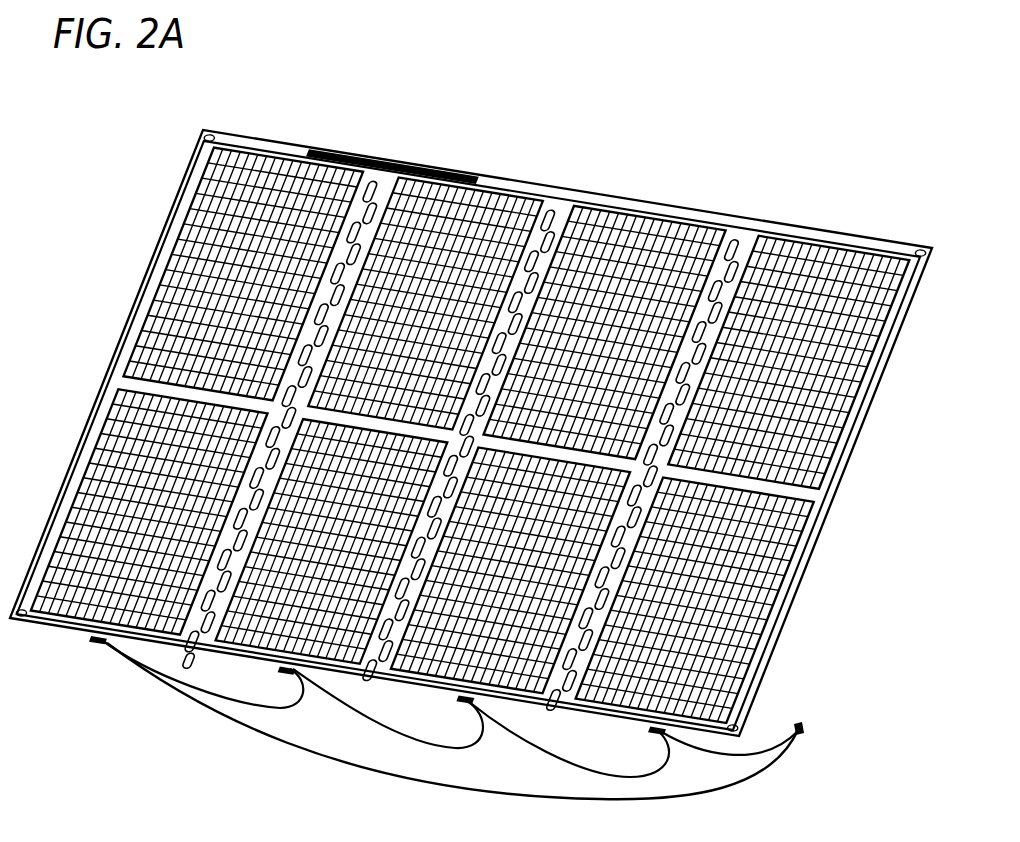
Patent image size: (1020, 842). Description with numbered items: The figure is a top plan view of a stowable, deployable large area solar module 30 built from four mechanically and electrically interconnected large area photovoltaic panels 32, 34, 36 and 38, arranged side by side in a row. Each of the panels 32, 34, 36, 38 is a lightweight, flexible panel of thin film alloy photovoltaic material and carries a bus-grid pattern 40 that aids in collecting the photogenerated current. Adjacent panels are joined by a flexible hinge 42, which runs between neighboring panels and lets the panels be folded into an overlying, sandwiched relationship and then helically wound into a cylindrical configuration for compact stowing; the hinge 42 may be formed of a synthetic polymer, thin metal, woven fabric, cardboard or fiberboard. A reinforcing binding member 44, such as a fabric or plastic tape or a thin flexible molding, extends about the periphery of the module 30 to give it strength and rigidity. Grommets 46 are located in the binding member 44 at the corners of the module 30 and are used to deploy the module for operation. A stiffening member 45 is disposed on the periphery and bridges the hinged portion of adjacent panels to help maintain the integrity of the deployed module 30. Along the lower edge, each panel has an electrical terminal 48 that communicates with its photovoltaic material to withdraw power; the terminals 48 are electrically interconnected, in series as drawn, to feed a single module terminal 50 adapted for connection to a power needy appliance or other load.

The large area solar module 30 is at (542, 150).
The large area photovoltaic panel 32 is at (288, 152).
The large area photovoltaic panel 34 is at (489, 190).
The large area photovoltaic panel 36 is at (660, 213).
The large area photovoltaic panel 38 is at (812, 245).
The bus-grid pattern 40 is at (470, 400).
The flexible hinge 42 is at (375, 178).
The reinforcing binding member 44 is at (130, 330).
The stiffening member 45 is at (345, 156).
The grommet 46 is at (208, 130).
The electrical terminal 48 is at (103, 648).
The module terminal 50 is at (806, 730).